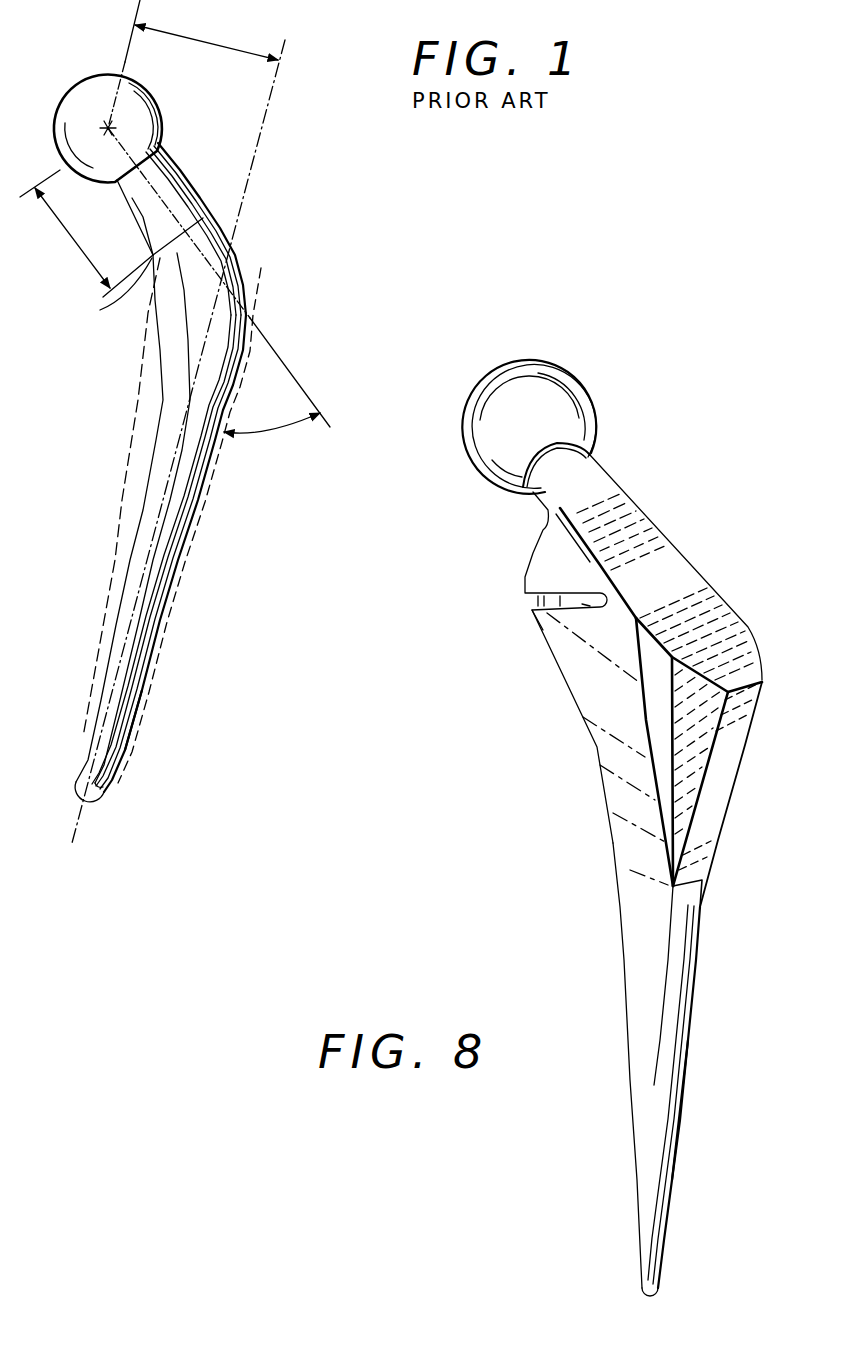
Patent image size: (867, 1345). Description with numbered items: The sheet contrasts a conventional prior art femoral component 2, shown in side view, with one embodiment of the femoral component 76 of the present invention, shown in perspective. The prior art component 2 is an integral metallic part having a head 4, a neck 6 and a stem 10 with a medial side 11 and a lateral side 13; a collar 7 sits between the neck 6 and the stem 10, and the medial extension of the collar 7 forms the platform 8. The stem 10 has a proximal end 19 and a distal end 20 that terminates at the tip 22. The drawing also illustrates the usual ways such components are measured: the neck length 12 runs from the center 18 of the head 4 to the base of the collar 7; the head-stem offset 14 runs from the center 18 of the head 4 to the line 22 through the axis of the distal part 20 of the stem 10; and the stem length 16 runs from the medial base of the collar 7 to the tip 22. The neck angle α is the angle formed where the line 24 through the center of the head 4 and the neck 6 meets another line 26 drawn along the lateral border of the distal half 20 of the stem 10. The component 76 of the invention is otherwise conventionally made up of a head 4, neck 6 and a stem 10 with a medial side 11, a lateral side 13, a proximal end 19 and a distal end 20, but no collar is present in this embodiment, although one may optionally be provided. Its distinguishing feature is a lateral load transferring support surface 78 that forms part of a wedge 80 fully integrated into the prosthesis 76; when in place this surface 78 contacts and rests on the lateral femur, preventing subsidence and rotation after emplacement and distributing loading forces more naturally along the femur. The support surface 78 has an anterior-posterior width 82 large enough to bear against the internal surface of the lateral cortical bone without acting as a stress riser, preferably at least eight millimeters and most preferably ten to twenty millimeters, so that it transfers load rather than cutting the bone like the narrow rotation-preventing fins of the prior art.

In FIG. 1, the femoral component 2 is at (303, 336).
In FIG. 1, the head 4 is at (94, 90).
In FIG. 8, the head 4 is at (492, 480).
In FIG. 1, the neck 6 is at (132, 198).
In FIG. 8, the neck 6 is at (567, 465).
In FIG. 1, the collar 7 is at (148, 254).
In FIG. 1, the platform 8 is at (148, 265).
In FIG. 1, the stem 10 is at (213, 370).
In FIG. 8, the stem 10 is at (622, 983).
In FIG. 1, the medial side 11 is at (95, 678).
In FIG. 8, the medial side 11 is at (615, 843).
In FIG. 1, the neck length 12 is at (65, 230).
In FIG. 1, the lateral side 13 is at (148, 678).
In FIG. 8, the lateral side 13 is at (697, 982).
In FIG. 1, the head-stem offset 14 is at (209, 32).
In FIG. 1, the stem length 16 is at (115, 538).
In FIG. 1, the center 18 is at (112, 130).
In FIG. 1, the proximal end 19 is at (250, 266).
In FIG. 8, the proximal end 19 is at (633, 503).
In FIG. 1, the distal end 20 is at (118, 760).
In FIG. 8, the distal end 20 is at (682, 1170).
In FIG. 1, the tip 22 is at (258, 148).
In FIG. 8, the tip 22 is at (647, 1300).
In FIG. 1, the line 24 is at (310, 394).
In FIG. 1, the line 26 is at (192, 542).
In FIG. 8, the femoral component 76 is at (737, 598).
In FIG. 8, the lateral support surface 78 is at (730, 742).
In FIG. 8, the wedge 80 is at (763, 688).
In FIG. 8, the anterior-posterior width 82 is at (728, 803).